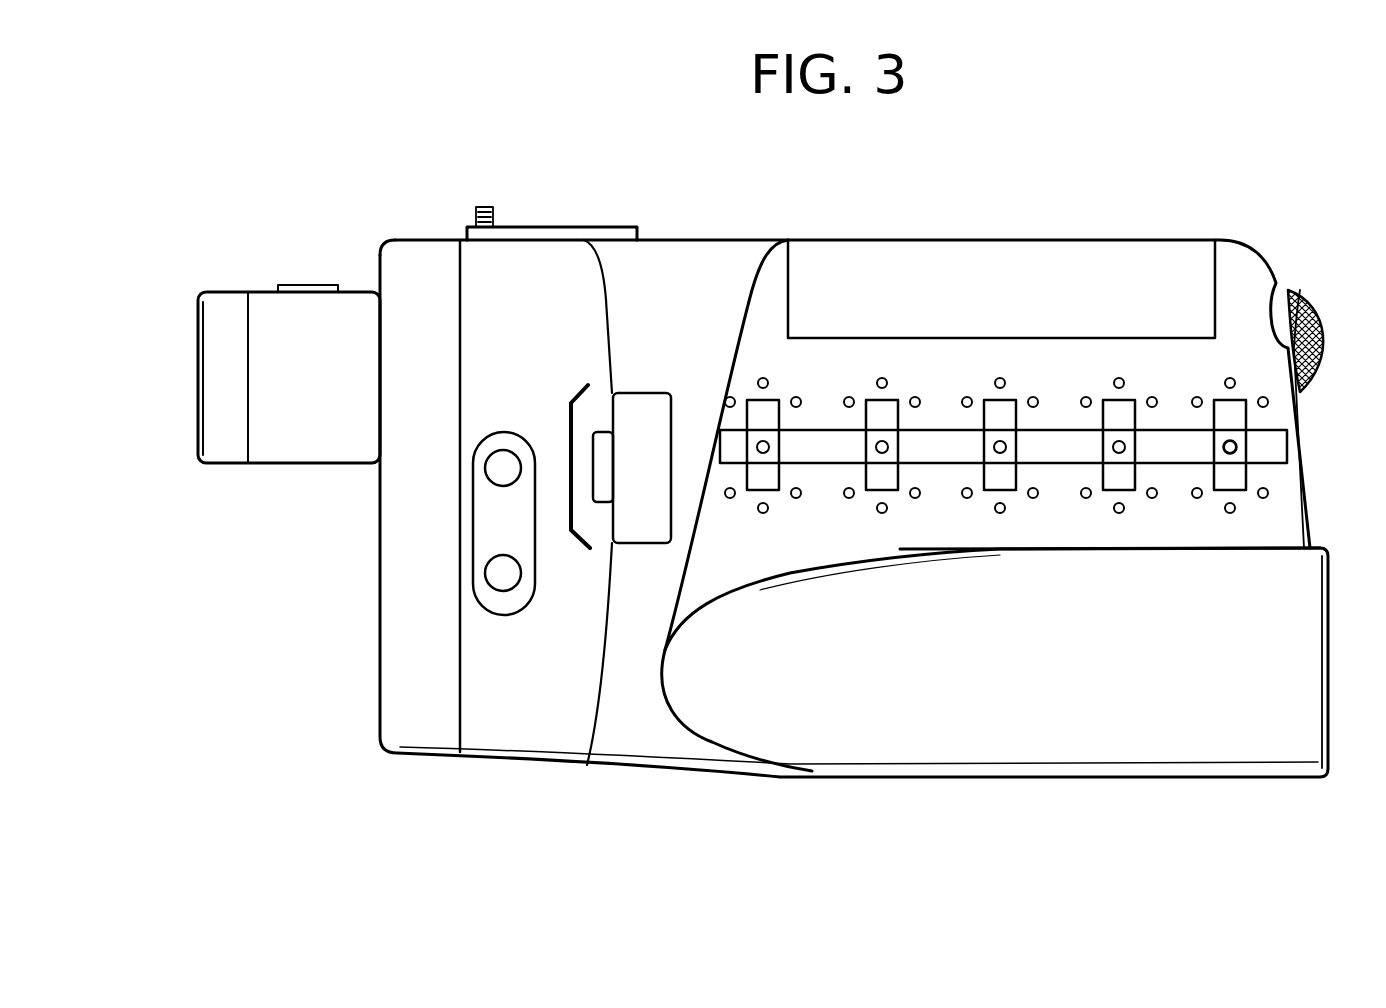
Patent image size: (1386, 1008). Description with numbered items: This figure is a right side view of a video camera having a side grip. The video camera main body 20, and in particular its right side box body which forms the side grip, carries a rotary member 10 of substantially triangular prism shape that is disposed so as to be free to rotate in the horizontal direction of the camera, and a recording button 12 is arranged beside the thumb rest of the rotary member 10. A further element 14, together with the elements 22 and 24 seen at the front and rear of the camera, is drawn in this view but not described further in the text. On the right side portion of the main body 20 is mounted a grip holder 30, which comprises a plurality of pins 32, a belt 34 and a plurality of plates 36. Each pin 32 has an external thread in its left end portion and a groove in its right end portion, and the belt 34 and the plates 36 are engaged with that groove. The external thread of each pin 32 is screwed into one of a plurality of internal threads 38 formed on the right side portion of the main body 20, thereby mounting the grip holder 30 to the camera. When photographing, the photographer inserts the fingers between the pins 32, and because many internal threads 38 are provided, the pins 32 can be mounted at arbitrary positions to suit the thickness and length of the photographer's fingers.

The rotary member 10 is at (648, 393).
The recording button 12 is at (593, 455).
The lever 14 is at (576, 395).
The video camera main body 20 is at (825, 512).
The lens barrel 22 is at (197, 368).
The viewfinder eyecup 24 is at (1322, 328).
The grip holder 30 is at (1172, 466).
The pin 32 is at (1230, 452).
The belt 34 is at (772, 488).
The plate 36 is at (885, 488).
The internal thread 38 is at (916, 397).